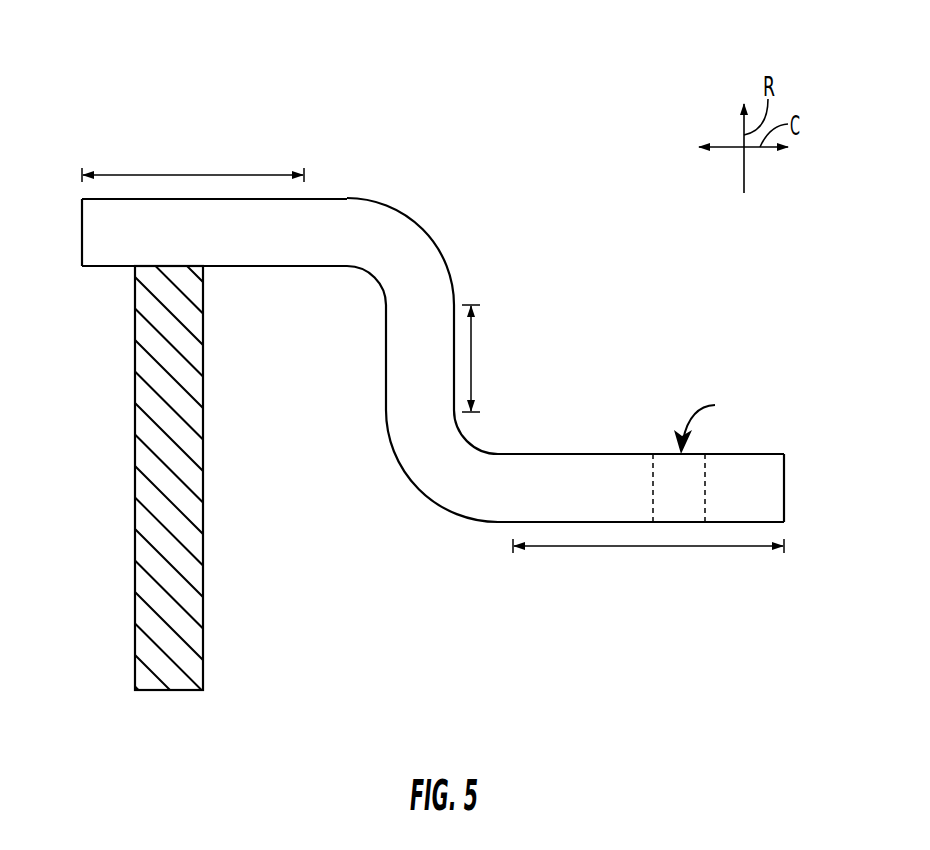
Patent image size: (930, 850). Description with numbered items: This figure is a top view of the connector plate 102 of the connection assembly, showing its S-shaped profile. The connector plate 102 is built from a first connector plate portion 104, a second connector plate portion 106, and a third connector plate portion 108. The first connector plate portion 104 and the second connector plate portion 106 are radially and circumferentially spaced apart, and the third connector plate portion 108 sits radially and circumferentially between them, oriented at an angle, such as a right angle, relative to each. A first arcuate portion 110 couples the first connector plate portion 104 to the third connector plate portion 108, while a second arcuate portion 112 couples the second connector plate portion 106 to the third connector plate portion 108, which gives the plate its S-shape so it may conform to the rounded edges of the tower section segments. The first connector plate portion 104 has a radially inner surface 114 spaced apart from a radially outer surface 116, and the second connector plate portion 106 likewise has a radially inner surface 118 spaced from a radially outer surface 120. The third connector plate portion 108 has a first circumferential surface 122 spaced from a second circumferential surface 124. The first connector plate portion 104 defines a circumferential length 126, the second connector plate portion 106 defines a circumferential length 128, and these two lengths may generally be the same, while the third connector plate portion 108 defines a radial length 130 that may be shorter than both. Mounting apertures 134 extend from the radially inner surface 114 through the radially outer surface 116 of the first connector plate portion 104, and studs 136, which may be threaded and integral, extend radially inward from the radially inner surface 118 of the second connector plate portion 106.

The connector plate 102 is at (115, 68).
The first connector plate portion 104 is at (772, 487).
The second connector plate portion 106 is at (88, 236).
The third connector plate portion 108 is at (407, 350).
The first arcuate portion 110 is at (485, 495).
The second arcuate portion 112 is at (395, 243).
The radially inner surface 114 is at (582, 527).
The radially outer surface 116 is at (578, 453).
The radially inner surface 118 is at (112, 268).
The radially outer surface 120 is at (248, 199).
The first circumferential surface 122 is at (455, 385).
The second circumferential surface 124 is at (385, 423).
The circumferential length 126 is at (650, 548).
The circumferential length 128 is at (186, 175).
The radial length 130 is at (471, 360).
The mounting apertures 134 is at (713, 421).
The studs 136 is at (170, 690).